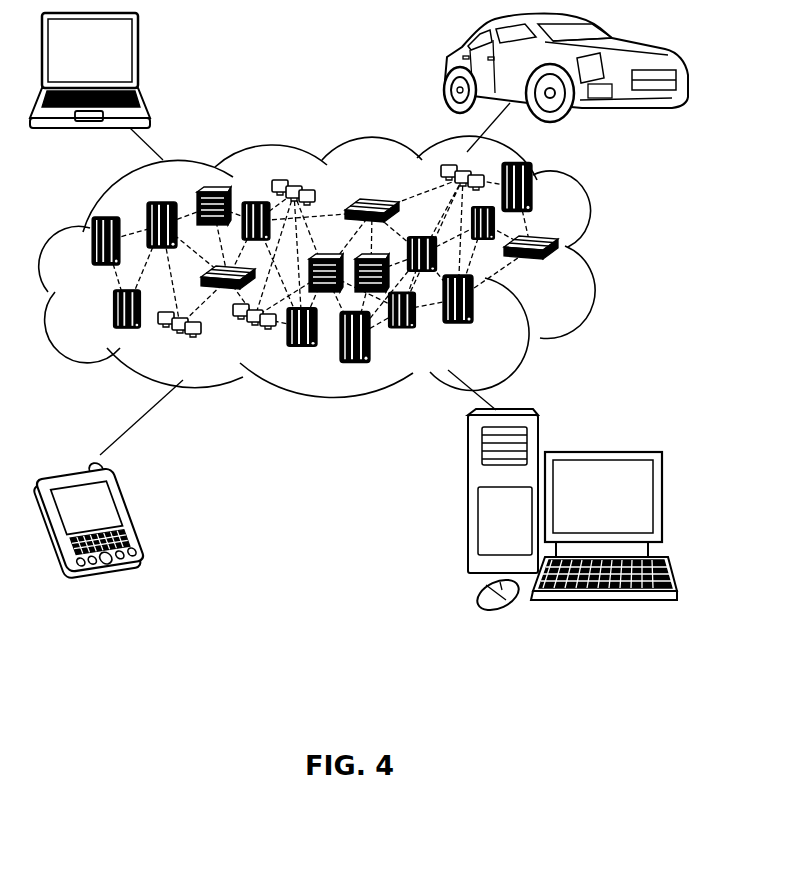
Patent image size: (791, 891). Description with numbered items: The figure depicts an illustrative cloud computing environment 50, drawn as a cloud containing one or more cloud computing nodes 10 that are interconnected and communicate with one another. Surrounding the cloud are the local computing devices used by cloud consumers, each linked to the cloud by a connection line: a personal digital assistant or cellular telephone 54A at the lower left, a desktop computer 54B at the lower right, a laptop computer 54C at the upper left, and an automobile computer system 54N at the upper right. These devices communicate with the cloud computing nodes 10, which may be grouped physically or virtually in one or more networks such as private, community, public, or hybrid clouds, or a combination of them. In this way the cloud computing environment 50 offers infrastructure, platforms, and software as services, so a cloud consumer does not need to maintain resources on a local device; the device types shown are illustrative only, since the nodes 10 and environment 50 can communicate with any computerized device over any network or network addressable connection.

The cloud computing node 10 is at (563, 277).
The cloud computing environment 50 is at (602, 247).
The personal digital assistant (PDA) or cellular telephone 54A is at (135, 517).
The desktop computer 54B is at (600, 450).
The laptop computer 54C is at (140, 60).
The automobile computer system 54N is at (448, 67).